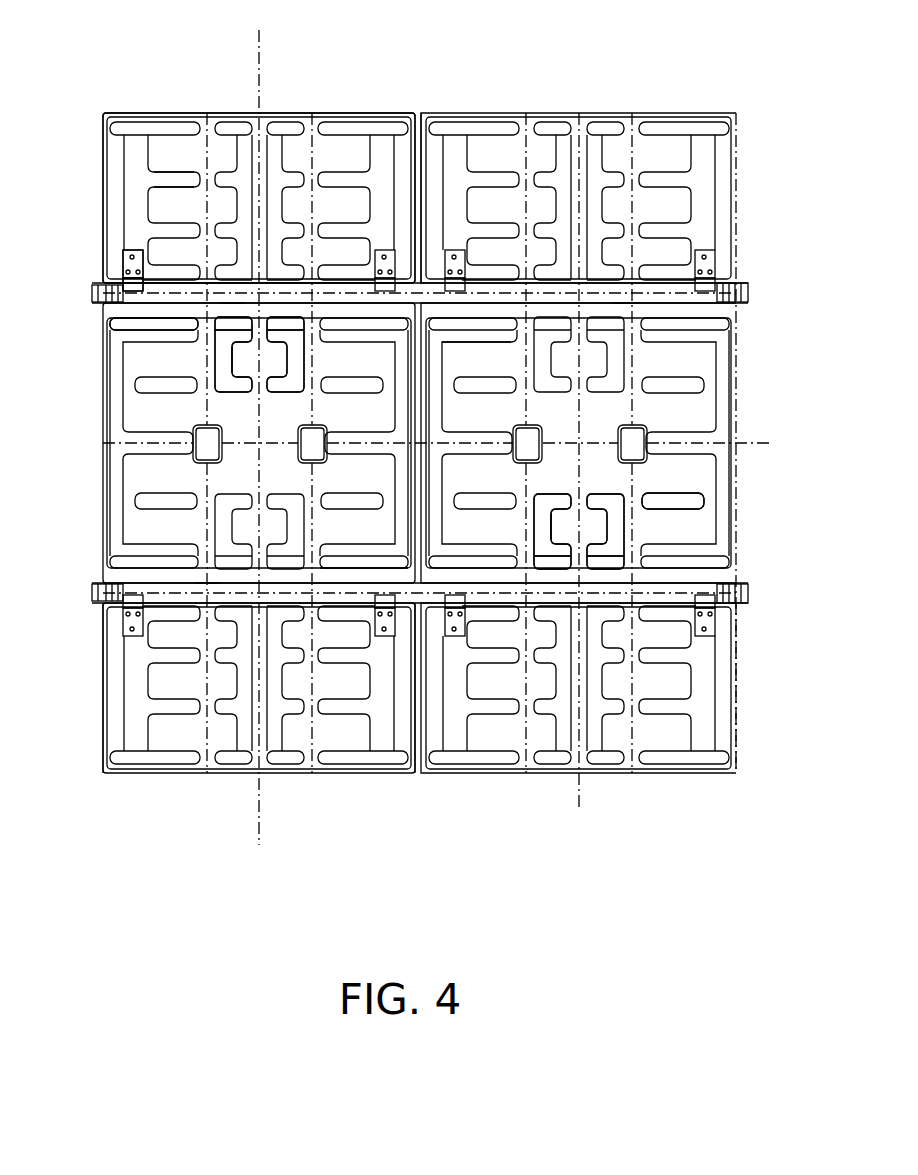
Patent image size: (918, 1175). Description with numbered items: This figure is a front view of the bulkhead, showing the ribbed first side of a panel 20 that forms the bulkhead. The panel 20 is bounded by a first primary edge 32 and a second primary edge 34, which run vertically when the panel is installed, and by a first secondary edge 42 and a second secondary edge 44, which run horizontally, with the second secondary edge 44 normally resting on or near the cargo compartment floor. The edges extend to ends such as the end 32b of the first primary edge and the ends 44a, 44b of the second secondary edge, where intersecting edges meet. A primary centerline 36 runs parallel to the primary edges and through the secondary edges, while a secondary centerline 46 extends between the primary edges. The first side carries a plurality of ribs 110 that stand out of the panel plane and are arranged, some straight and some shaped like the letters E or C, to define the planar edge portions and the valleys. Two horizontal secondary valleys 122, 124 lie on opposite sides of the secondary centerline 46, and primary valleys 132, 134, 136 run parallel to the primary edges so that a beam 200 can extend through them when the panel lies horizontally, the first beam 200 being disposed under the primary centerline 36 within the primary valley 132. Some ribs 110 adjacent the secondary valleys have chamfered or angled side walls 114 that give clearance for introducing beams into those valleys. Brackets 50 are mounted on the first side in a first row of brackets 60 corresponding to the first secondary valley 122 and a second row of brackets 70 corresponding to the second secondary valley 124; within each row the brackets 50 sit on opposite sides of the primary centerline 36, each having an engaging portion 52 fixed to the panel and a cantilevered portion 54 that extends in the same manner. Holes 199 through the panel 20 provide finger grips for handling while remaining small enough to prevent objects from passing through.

The panel 20 is at (190, 725).
The first primary edge 32 is at (420, 207).
The end of first primary edge 32b is at (103, 776).
The second primary edge 34 is at (417, 172).
The primary centerline 36 is at (255, 62).
The first secondary edge 42 is at (163, 112).
The second secondary edge 44 is at (500, 113).
The end of second secondary edge 44a is at (736, 113).
The end of second secondary edge 44b is at (420, 778).
The secondary centerline 46 is at (370, 447).
The bracket 50 is at (126, 258).
The engaging portion 52 is at (150, 255).
The cantilevered portion 54 is at (124, 296).
The first row of brackets 60 is at (692, 260).
The second row of brackets 70 is at (163, 600).
The rib 110 is at (155, 185).
The chamfered or angled side wall 114 is at (470, 346).
The first secondary valley 122 is at (160, 316).
The second secondary valley 124 is at (337, 575).
The primary valley 132 is at (207, 378).
The primary valley 134 is at (255, 366).
The primary valley 136 is at (315, 362).
The hole 199 is at (632, 440).
The beam 200 is at (232, 290).